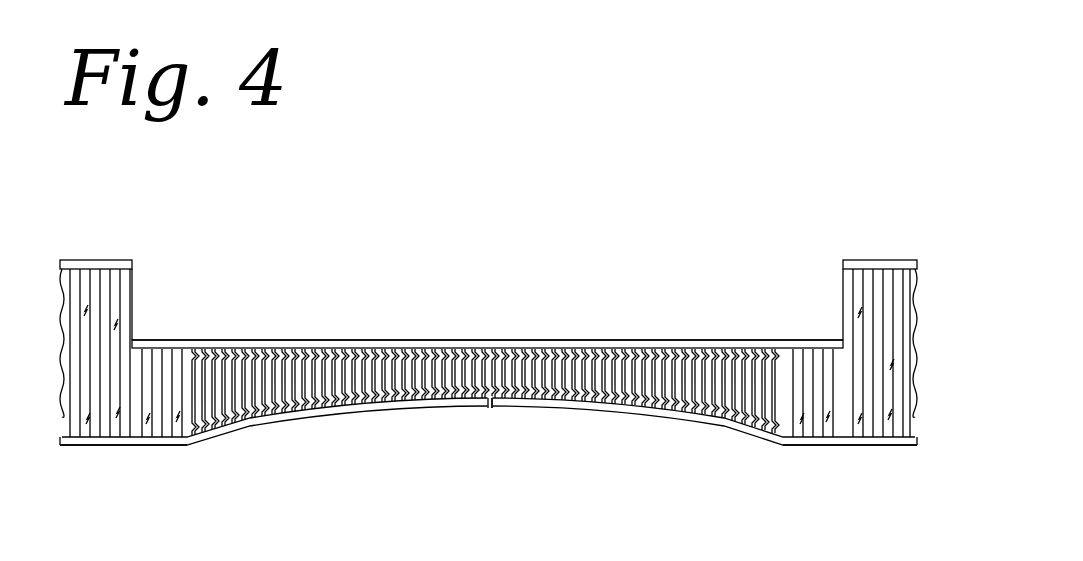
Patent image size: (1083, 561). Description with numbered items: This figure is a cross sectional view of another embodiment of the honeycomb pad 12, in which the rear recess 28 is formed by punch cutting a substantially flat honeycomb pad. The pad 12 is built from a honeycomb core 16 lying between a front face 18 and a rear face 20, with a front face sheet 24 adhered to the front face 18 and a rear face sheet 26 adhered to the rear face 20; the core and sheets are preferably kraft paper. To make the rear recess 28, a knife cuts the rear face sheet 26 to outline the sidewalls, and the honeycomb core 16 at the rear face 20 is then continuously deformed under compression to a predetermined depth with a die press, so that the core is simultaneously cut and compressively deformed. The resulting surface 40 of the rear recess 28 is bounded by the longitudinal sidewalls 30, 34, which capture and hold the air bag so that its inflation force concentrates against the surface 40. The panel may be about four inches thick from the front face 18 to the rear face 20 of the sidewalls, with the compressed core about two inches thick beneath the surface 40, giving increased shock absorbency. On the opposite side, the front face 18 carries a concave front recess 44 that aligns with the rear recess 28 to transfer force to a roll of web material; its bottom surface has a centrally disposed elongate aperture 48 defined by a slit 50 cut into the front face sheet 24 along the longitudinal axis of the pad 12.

The pad 12 is at (385, 240).
The honeycomb core 16 is at (882, 382).
The front face 18 is at (840, 444).
The rear face 20 is at (643, 336).
The front face sheet 24 is at (148, 440).
The rear face sheet 26 is at (283, 340).
The rear recess 28 is at (483, 296).
The longitudinal sidewall 30 is at (872, 262).
The longitudinal sidewall 34 is at (97, 278).
The surface of the rear recess 40 is at (533, 340).
The front recess 44 is at (424, 412).
The elongate aperture 48 is at (487, 414).
The slit 50 is at (493, 406).